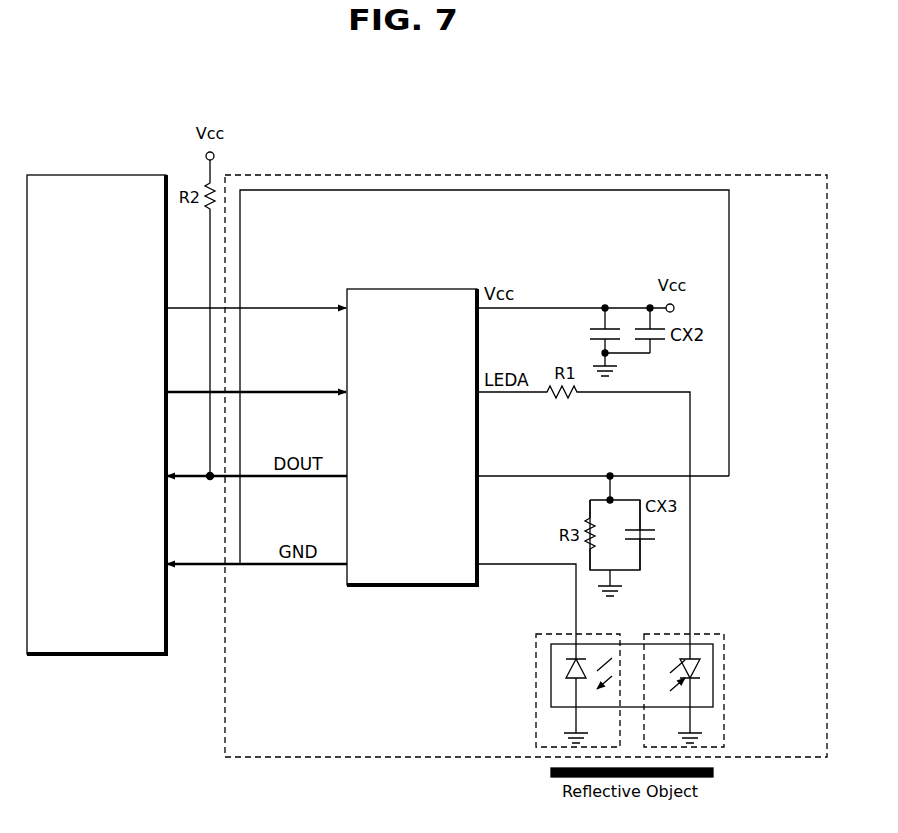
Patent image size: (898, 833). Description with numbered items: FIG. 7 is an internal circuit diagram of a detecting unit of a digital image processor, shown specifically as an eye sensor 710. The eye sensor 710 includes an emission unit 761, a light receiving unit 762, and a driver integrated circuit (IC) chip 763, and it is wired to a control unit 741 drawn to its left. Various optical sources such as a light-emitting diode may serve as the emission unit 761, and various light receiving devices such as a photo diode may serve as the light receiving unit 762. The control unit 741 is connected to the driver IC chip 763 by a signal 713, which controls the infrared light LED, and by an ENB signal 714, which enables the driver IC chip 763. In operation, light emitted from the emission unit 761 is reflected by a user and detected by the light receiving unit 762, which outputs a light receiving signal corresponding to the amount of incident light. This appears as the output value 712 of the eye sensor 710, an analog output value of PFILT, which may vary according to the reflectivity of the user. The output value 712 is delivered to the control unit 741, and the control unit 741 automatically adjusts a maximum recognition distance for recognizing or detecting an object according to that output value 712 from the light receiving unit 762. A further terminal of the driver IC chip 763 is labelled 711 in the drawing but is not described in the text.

The control unit 741 is at (96, 175).
The eye sensor 710 is at (536, 175).
The driver integrated circuit (IC) chip 763 is at (402, 289).
The signal 713 is at (346, 300).
The ENB signal 714 is at (346, 390).
The output value 712 is at (479, 481).
The PD terminal 711 is at (479, 568).
The light receiving unit 762 is at (536, 688).
The emission unit 761 is at (724, 688).